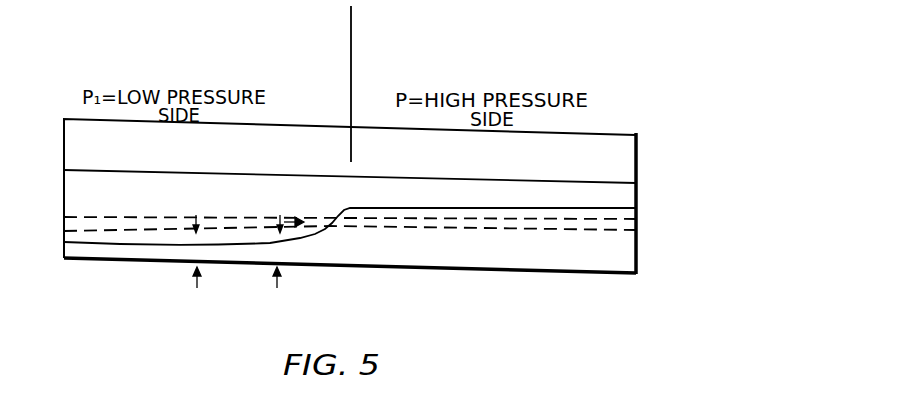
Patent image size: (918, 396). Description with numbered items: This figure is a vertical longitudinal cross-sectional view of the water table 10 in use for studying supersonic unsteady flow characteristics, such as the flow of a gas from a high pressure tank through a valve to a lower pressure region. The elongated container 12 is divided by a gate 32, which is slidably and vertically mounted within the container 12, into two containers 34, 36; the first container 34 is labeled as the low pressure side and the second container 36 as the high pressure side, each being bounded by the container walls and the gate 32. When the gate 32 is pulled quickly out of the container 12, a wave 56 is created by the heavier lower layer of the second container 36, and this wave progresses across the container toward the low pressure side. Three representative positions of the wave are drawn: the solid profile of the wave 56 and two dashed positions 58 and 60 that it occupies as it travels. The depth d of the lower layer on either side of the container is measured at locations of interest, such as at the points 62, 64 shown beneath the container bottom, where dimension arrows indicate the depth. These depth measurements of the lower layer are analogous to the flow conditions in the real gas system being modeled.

The water table 10 is at (546, 67).
The container 12 is at (612, 133).
The gate 32 is at (352, 116).
The first container 34 is at (212, 164).
The second container 36 is at (486, 170).
The wave 56 is at (342, 215).
The second wave position 58 is at (279, 215).
The third wave position 60 is at (208, 220).
The measurement point 62 is at (242, 300).
The measurement point 64 is at (350, 276).